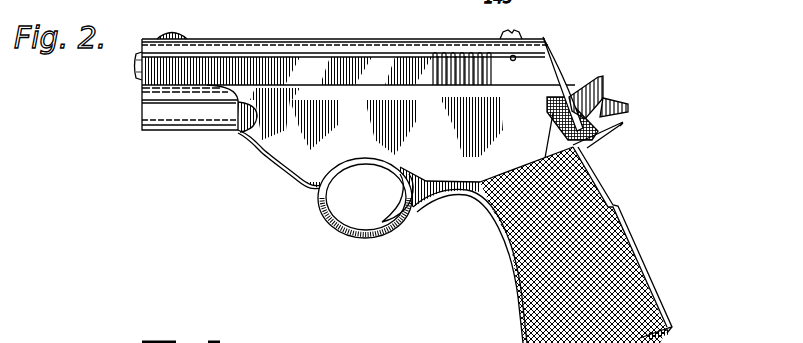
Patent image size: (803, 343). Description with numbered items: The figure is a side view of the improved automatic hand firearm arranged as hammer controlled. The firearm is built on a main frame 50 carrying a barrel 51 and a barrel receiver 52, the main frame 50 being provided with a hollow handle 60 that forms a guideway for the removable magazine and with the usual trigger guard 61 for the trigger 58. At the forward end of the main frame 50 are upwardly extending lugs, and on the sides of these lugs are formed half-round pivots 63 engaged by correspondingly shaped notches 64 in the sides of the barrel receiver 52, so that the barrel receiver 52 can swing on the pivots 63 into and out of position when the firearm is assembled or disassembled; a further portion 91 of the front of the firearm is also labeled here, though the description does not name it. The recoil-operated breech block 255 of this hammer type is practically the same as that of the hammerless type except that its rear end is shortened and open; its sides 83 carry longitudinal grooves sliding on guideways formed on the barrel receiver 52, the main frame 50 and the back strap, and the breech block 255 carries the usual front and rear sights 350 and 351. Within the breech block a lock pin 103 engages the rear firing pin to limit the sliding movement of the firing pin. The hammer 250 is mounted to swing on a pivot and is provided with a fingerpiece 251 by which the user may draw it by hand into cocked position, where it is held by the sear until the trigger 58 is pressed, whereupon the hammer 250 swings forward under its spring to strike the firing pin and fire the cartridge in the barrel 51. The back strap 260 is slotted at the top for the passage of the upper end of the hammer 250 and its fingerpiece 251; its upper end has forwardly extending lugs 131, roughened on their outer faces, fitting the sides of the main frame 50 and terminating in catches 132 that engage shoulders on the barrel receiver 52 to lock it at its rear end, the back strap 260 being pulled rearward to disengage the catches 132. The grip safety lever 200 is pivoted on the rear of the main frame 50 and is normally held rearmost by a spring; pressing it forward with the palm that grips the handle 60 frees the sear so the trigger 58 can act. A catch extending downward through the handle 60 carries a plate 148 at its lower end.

The front sight 350 is at (172, 24).
The barrel 51 is at (134, 61).
The breech block 255 is at (338, 44).
The rear sight 351 is at (507, 33).
The lock pin 103 is at (515, 55).
The sides of the breech block 83 is at (398, 90).
The forwardly extending lugs 131 is at (555, 100).
The catches 132 is at (550, 114).
The hammer 250 is at (583, 90).
The fingerpiece 251 is at (630, 106).
The lever 200 is at (604, 183).
The back strap 260 is at (631, 240).
The handle 60 is at (522, 305).
The plate 148 is at (662, 331).
The front frame 91 is at (160, 128).
The half-round pivots 63 is at (233, 130).
The notches 64 is at (249, 145).
The barrel receiver 52 is at (303, 160).
The trigger 58 is at (400, 203).
The trigger guard 61 is at (383, 240).
The main frame 50 is at (439, 195).